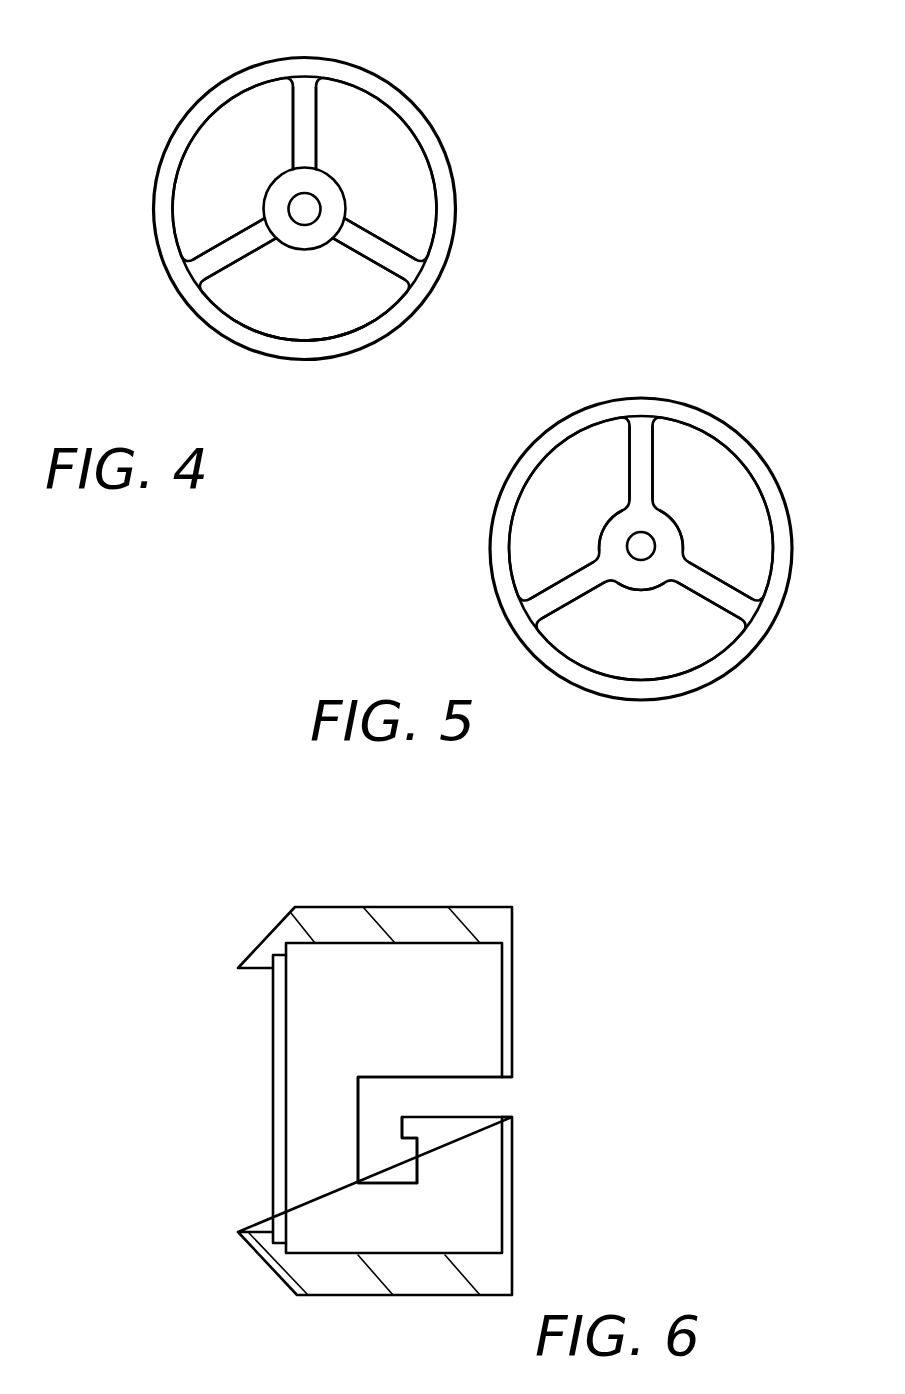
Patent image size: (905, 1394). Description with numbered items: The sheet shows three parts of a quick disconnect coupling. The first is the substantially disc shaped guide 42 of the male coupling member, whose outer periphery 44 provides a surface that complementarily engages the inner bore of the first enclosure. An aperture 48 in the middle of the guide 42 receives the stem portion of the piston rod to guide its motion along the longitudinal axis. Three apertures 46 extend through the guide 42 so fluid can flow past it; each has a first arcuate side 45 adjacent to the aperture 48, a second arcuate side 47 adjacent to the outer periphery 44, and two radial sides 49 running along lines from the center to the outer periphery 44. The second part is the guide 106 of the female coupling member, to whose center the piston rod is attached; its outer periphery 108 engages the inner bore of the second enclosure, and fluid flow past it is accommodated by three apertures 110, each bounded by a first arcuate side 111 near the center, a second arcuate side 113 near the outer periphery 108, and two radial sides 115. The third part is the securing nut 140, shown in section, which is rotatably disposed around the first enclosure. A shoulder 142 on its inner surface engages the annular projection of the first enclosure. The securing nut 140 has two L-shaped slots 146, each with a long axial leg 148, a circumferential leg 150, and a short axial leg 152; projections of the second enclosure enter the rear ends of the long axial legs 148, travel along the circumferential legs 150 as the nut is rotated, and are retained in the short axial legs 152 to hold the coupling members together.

In FIG. 4, the guide 42 is at (136, 94).
In FIG. 4, the outer periphery 44 is at (455, 223).
In FIG. 4, the first arcuate side 45 is at (265, 203).
In FIG. 4, the apertures 46 is at (268, 140).
In FIG. 4, the second arcuate side 47 is at (384, 306).
In FIG. 4, the aperture 48 is at (298, 222).
In FIG. 4, the radial sides 49 is at (320, 100).
In FIG. 5, the guide 106 is at (734, 367).
In FIG. 5, the outer periphery 108 is at (670, 700).
In FIG. 5, the apertures 110 is at (603, 487).
In FIG. 5, the first arcuate side 111 is at (598, 533).
In FIG. 5, the second arcuate side 113 is at (667, 677).
In FIG. 5, the radial sides 115 is at (655, 458).
In FIG. 6, the securing nut 140 is at (230, 916).
In FIG. 6, the shoulder 142 is at (281, 958).
In FIG. 6, the L-shaped slots 146 is at (532, 1102).
In FIG. 6, the long axial leg 148 is at (446, 1088).
In FIG. 6, the circumferential leg 150 is at (368, 1131).
In FIG. 6, the short axial leg 152 is at (396, 1171).